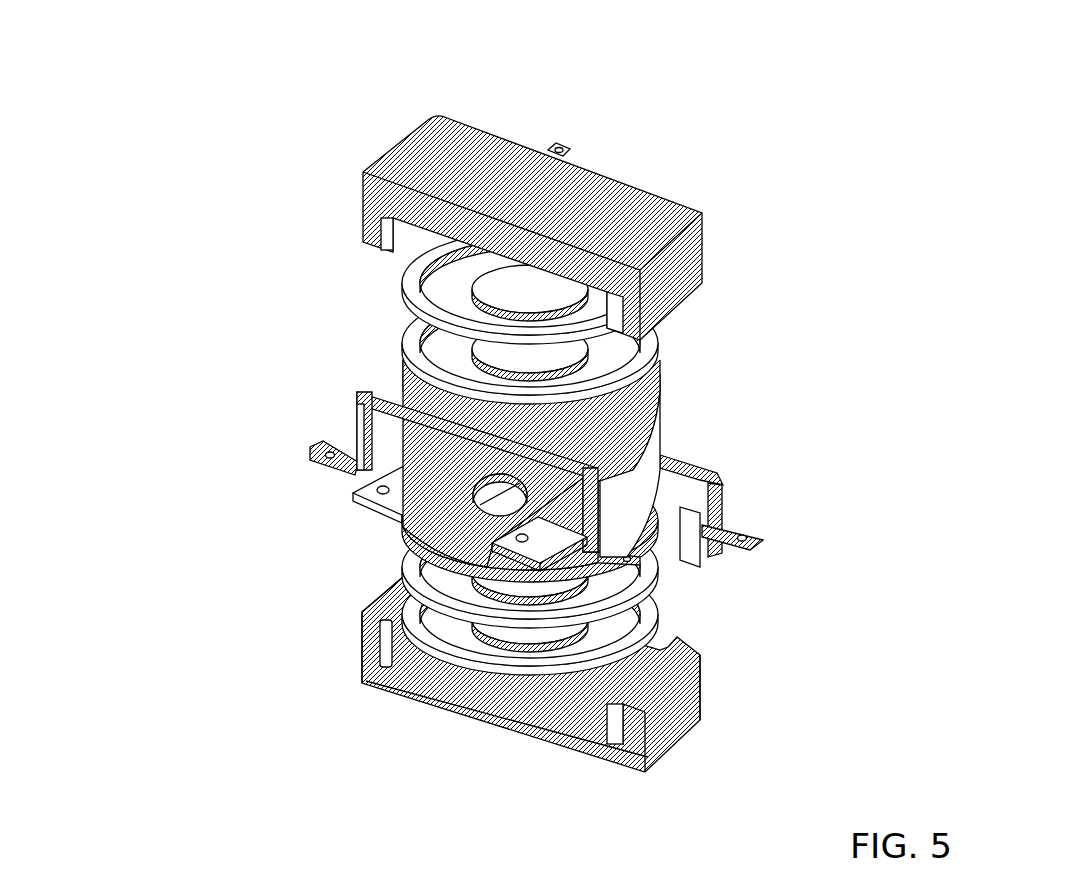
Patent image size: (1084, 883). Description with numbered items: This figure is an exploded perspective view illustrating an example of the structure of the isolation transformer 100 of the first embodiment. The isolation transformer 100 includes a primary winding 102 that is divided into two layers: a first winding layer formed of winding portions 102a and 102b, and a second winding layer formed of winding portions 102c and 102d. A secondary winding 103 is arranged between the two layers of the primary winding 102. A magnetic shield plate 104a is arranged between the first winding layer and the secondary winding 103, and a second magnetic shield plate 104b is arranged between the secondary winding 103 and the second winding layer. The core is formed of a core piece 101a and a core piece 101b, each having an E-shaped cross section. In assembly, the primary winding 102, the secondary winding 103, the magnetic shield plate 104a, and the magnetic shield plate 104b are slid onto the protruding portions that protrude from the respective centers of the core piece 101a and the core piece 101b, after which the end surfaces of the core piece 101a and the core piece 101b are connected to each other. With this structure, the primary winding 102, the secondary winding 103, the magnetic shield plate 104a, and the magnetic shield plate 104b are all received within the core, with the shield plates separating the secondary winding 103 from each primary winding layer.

The isolation transformer 100 is at (555, 102).
The core piece 101a is at (695, 207).
The core piece 101b is at (693, 707).
The primary winding 102 is at (153, 170).
The winding portion 102a is at (410, 273).
The winding portion 102b is at (410, 340).
The winding portion 102c is at (410, 573).
The winding portion 102d is at (410, 638).
The secondary winding 103 is at (647, 450).
The magnetic shield plate 104a is at (653, 393).
The magnetic shield plate 104b is at (645, 527).